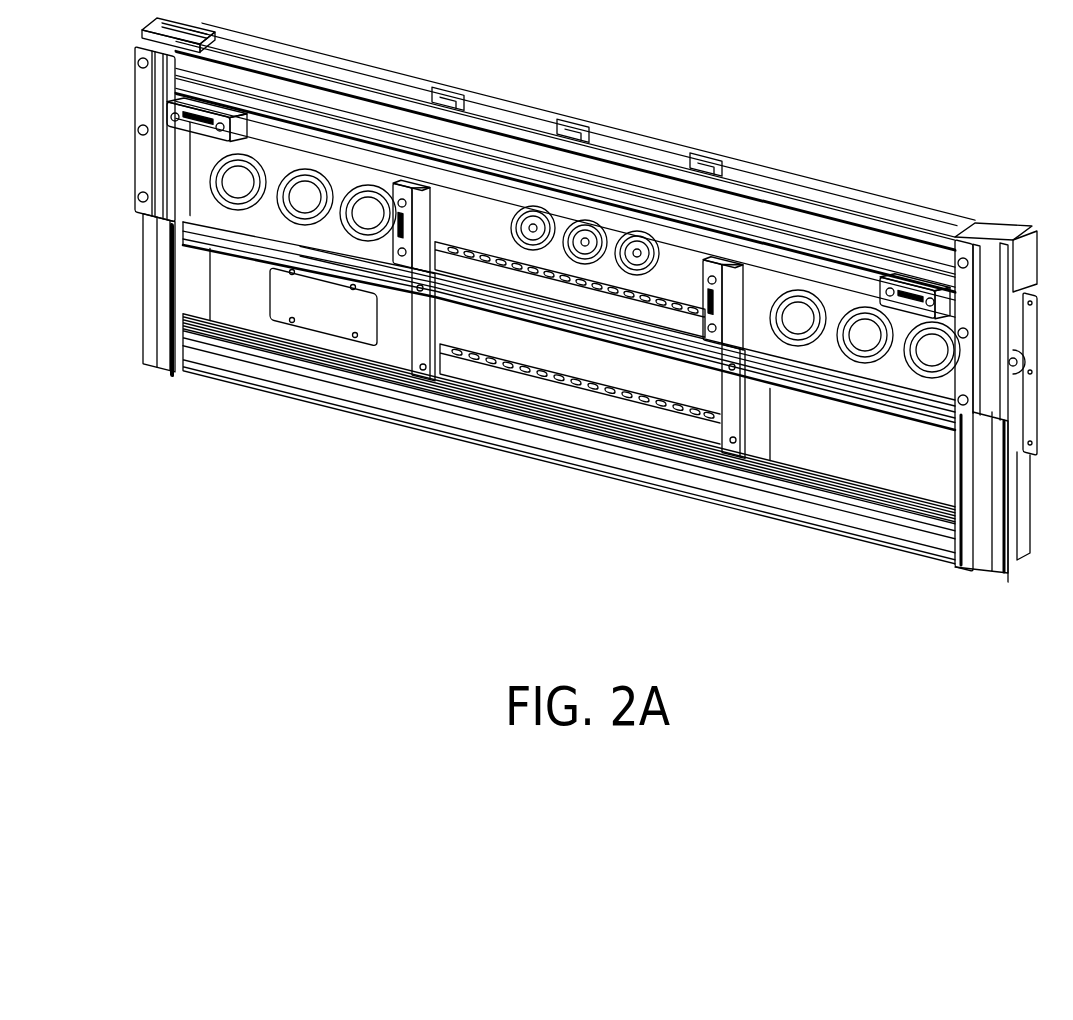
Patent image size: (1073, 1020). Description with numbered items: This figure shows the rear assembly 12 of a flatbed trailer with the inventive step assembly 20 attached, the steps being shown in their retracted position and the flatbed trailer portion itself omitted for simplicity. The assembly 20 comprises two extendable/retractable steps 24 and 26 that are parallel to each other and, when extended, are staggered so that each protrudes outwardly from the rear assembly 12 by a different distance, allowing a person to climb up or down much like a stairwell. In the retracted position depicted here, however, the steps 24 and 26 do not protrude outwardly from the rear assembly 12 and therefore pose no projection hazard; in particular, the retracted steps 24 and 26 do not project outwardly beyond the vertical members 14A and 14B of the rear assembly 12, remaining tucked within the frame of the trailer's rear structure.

The rear assembly 12 is at (247, 287).
The vertical member 14A is at (420, 340).
The vertical member 14B is at (740, 400).
The assembly 20 is at (525, 483).
The step 24 is at (633, 305).
The step 26 is at (688, 430).